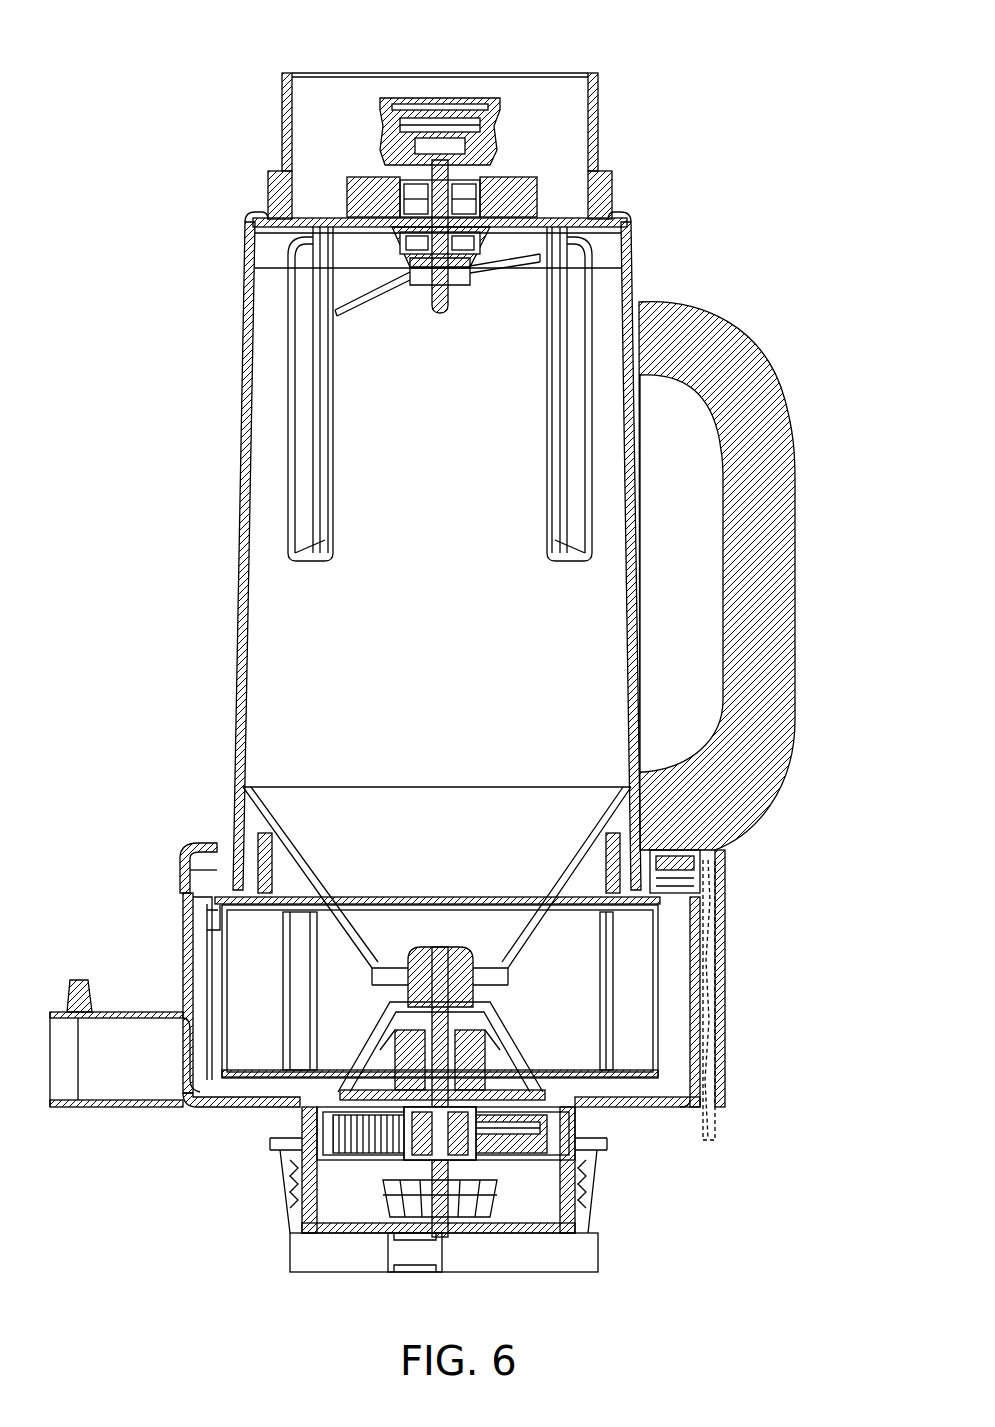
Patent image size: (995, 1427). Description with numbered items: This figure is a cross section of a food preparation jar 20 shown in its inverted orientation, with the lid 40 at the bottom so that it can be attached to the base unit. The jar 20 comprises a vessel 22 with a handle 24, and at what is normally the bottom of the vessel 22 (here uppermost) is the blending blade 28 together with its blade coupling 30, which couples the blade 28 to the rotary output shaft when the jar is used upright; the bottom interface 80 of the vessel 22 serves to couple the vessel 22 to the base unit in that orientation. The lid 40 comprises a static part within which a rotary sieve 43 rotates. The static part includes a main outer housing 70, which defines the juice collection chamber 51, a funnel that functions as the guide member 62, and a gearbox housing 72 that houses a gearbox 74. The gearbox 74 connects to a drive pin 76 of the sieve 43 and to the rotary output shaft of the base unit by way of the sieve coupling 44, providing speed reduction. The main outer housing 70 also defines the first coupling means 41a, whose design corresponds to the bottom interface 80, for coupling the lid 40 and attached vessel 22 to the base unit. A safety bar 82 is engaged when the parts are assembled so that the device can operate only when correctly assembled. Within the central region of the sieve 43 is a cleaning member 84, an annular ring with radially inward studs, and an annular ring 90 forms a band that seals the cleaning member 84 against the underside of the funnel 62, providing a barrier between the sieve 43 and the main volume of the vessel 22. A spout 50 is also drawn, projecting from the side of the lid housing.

The preparation jar 20 is at (744, 126).
The vessel 22 is at (235, 497).
The handle 24 is at (795, 530).
The blending blade 28 is at (350, 312).
The blade coupling 30 is at (505, 98).
The lid 40 is at (126, 851).
The first coupling means 41a is at (285, 1237).
The rotary sieve 43 is at (660, 1035).
The sieve coupling 44 is at (488, 1205).
The spout 50 is at (155, 1100).
The juice collection chamber 51 is at (207, 973).
The guide member 62 is at (575, 830).
The main outer housing 70 is at (188, 850).
The gearbox housing 72 is at (378, 1158).
The gearbox 74 is at (374, 1103).
The drive pin 76 is at (442, 998).
The bottom interface 80 is at (283, 102).
The safety bar 82 is at (705, 1140).
The cleaning member 84 is at (300, 1027).
The annular ring 90 is at (270, 863).